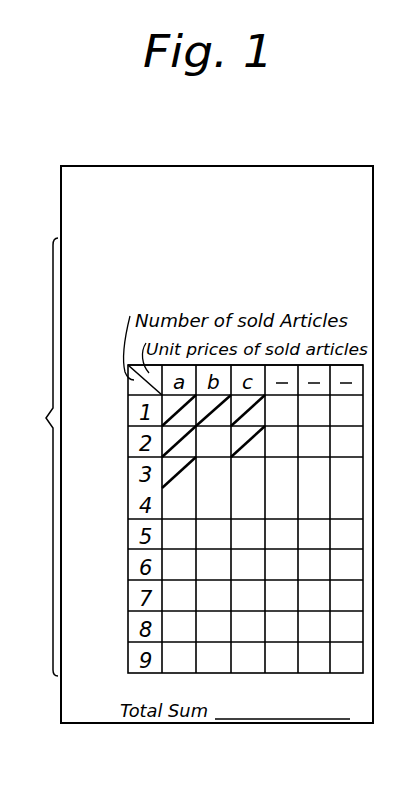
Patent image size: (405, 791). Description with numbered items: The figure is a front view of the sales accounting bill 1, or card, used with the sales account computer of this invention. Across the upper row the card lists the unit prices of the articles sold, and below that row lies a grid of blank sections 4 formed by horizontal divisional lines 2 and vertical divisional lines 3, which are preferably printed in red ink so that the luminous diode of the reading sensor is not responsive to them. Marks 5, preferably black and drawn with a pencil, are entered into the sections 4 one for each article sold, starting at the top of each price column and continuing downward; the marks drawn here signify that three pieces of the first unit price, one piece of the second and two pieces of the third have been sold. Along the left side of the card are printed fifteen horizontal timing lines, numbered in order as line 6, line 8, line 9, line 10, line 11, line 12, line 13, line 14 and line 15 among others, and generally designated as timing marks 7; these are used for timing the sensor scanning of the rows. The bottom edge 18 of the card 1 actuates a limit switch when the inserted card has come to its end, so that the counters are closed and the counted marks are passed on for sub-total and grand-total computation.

The sales accounting bill 1 is at (232, 159).
The horizontal divisional line 2 is at (124, 642).
The vertical divisional line 3 is at (124, 611).
The blank section 4 is at (124, 580).
The mark 5 is at (124, 549).
The timing mark line 6 is at (124, 519).
The timing marks 7 is at (43, 457).
The timing mark line 8 is at (124, 457).
The timing mark line 9 is at (124, 426).
The timing mark line 10 is at (124, 395).
The timing mark line 11 is at (124, 364).
The timing mark line 12 is at (124, 333).
The timing mark line 13 is at (124, 303).
The timing mark line 14 is at (124, 273).
The timing mark line 15 is at (124, 243).
The bottom edge 18 is at (97, 712).